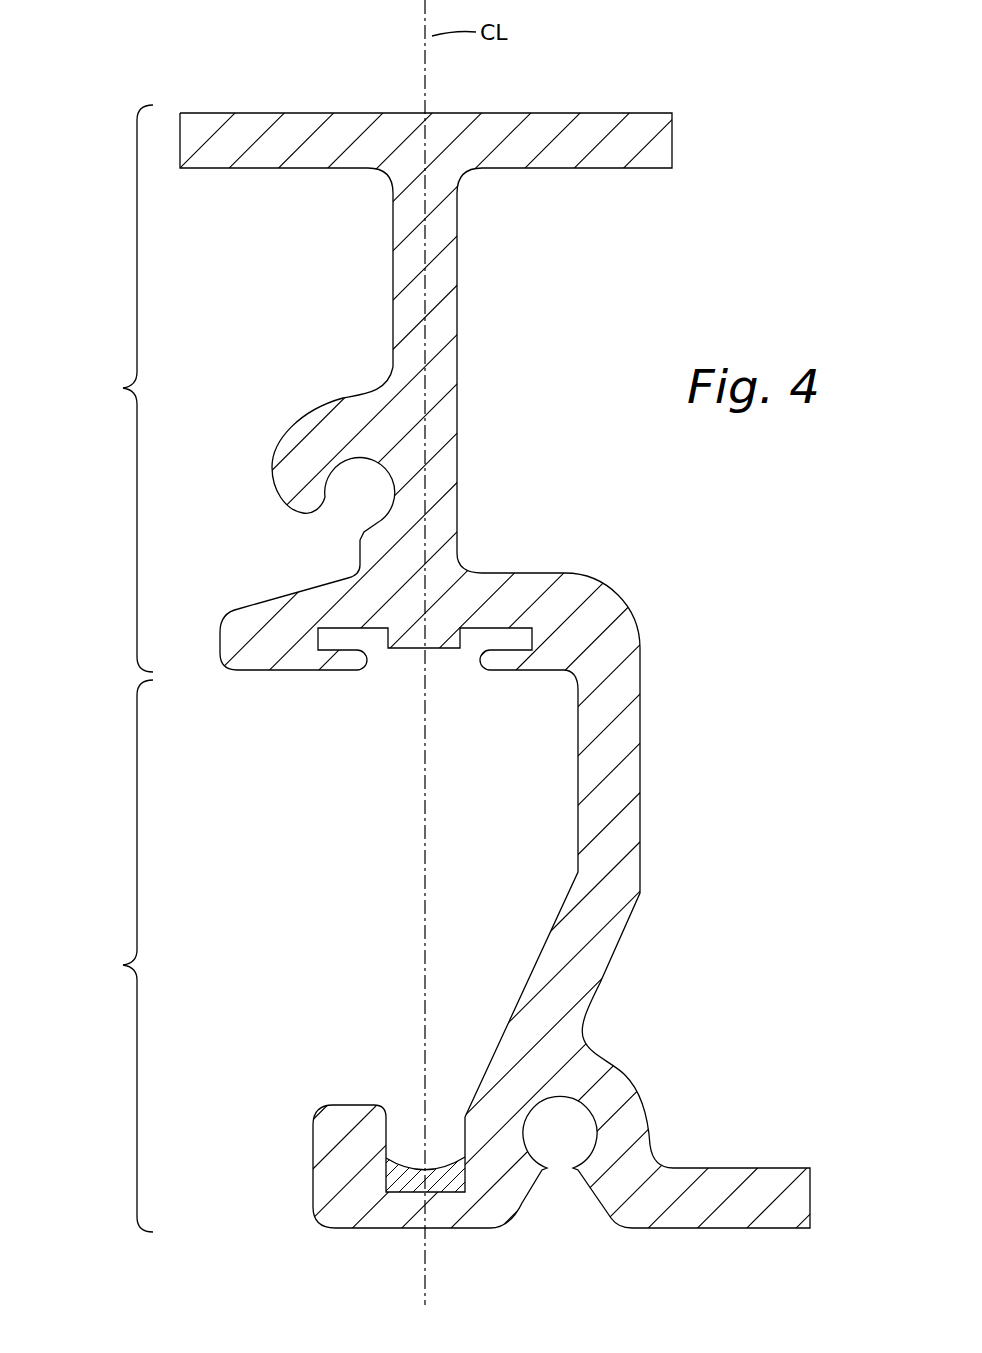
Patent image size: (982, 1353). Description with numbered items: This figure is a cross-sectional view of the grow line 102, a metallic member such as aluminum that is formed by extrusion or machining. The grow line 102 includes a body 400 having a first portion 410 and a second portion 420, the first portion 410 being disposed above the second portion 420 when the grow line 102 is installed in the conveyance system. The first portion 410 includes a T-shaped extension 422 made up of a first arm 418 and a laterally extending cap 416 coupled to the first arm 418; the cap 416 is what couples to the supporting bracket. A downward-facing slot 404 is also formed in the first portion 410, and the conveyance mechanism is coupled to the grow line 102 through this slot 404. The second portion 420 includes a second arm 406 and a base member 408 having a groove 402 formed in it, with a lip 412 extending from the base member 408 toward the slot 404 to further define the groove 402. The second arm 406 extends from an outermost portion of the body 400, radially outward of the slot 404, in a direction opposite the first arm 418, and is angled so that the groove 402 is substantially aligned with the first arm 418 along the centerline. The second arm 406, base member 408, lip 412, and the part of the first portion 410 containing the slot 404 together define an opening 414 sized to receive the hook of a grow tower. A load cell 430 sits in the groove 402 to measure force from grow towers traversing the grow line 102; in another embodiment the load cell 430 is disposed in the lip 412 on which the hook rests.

The grow line 102 is at (147, 62).
The body 400 is at (614, 597).
The groove 402 is at (403, 1107).
The downward-facing slot 404 is at (380, 672).
The second arm 406 is at (643, 774).
The base member 408 is at (493, 1215).
The first portion 410 is at (235, 388).
The lip 412 is at (320, 1148).
The opening 414 is at (384, 898).
The cap 416 is at (674, 138).
The first arm 418 is at (458, 270).
The second portion 420 is at (114, 956).
The T-shaped extension 422 is at (520, 400).
The load cell 430 is at (407, 1182).